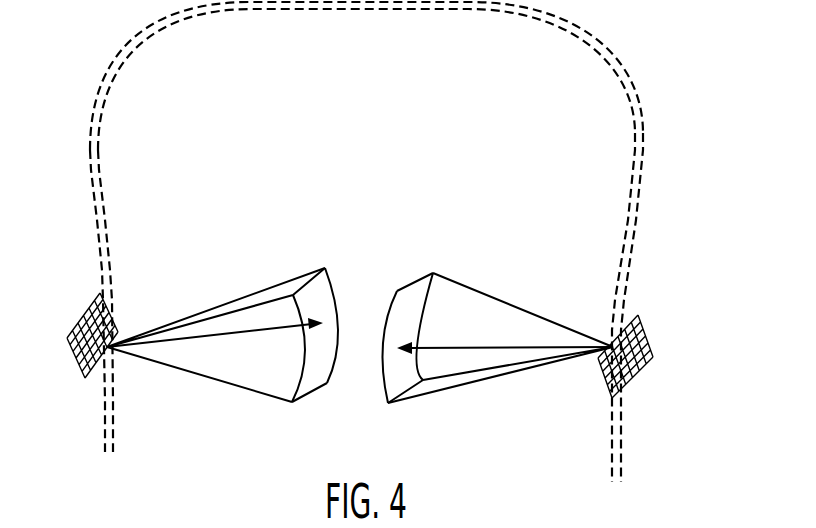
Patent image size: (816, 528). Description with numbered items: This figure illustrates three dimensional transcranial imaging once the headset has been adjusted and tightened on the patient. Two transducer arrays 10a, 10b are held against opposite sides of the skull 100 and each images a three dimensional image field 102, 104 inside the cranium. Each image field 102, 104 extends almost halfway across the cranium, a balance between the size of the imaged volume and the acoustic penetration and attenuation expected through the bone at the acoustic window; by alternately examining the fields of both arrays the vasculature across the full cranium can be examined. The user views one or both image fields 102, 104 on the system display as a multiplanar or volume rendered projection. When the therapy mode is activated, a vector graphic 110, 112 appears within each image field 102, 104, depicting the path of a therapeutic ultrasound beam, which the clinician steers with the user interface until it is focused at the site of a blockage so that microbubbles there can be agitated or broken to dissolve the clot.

The skull 100 is at (98, 145).
The transducer array 10a is at (92, 303).
The transducer array 10b is at (642, 330).
The 3D image field 102 is at (300, 275).
The 3D image field 104 is at (467, 285).
The vector graphic 110 is at (257, 337).
The vector graphic 112 is at (463, 345).